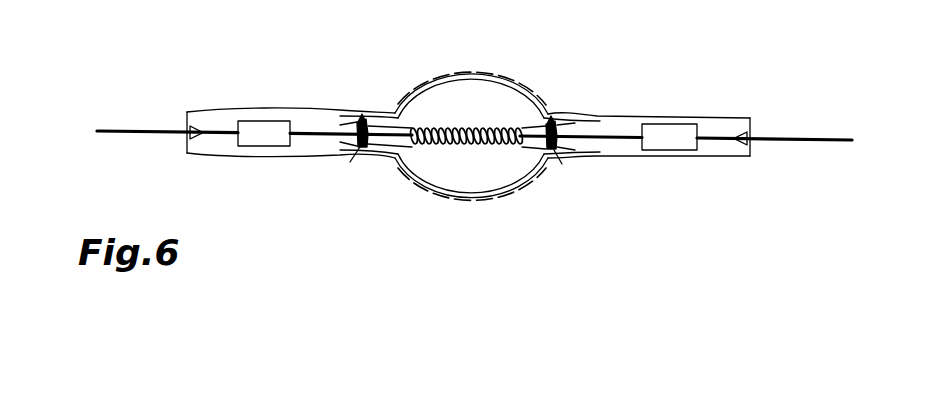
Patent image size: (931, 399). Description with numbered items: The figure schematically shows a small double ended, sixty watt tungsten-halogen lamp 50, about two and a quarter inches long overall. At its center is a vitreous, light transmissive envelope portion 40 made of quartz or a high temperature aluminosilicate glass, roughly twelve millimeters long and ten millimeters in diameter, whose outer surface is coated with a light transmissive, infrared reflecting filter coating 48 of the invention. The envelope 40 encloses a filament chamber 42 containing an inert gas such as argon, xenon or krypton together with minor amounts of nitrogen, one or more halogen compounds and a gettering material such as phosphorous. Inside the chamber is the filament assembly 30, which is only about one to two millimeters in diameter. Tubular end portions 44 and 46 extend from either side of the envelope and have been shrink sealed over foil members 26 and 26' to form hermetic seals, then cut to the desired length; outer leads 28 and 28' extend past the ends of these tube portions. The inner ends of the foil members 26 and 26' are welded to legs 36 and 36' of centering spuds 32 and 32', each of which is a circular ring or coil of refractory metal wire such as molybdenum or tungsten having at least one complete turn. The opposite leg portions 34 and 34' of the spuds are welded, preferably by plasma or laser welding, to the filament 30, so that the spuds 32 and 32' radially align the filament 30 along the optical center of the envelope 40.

The foil member 26 is at (264, 160).
The foil member 26' is at (669, 163).
The outer lead 28 is at (167, 100).
The outer lead 28' is at (774, 104).
The filament assembly 30 is at (465, 152).
The centering spud 32 is at (366, 161).
The centering spud 32' is at (573, 162).
The leg portion 34 is at (368, 158).
The leg portion 34' is at (561, 159).
The leg 36 is at (352, 109).
The leg 36' is at (585, 107).
The envelope portion 40 is at (499, 68).
The filament chamber 42 is at (484, 193).
The tubular end portion 44 is at (263, 106).
The tubular end portion 46 is at (672, 110).
The infrared reflecting filter coating 48 is at (431, 74).
The tungsten-halogen lamp 50 is at (549, 60).